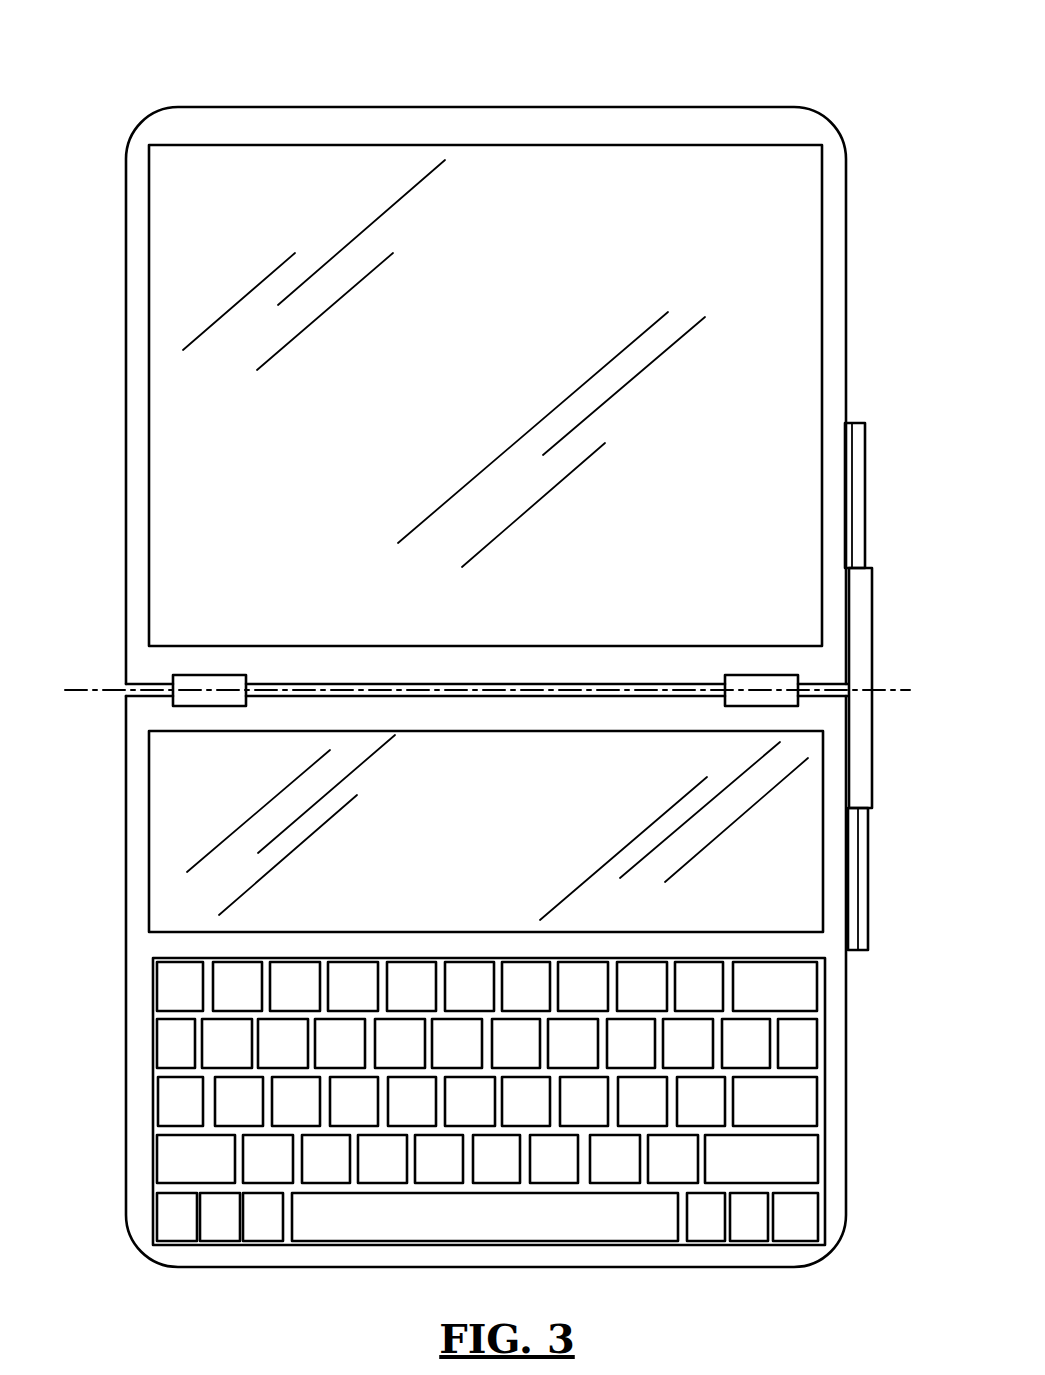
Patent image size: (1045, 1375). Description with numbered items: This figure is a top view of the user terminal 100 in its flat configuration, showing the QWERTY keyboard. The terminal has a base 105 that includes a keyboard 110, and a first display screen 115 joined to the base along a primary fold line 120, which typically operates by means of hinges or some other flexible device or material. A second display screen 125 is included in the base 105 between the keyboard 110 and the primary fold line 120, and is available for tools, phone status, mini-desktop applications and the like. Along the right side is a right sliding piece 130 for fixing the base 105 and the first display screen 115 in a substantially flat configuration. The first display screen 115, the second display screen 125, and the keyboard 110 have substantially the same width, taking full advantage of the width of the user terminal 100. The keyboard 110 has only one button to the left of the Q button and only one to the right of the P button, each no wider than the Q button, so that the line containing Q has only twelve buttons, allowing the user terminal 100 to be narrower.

The user terminal 100 is at (134, 91).
The base 105 is at (143, 1203).
The keyboard 110 is at (818, 1068).
The first display screen 115 is at (485, 395).
The primary fold line 120 is at (107, 692).
The second display screen 125 is at (486, 831).
The right sliding piece 130 is at (867, 590).